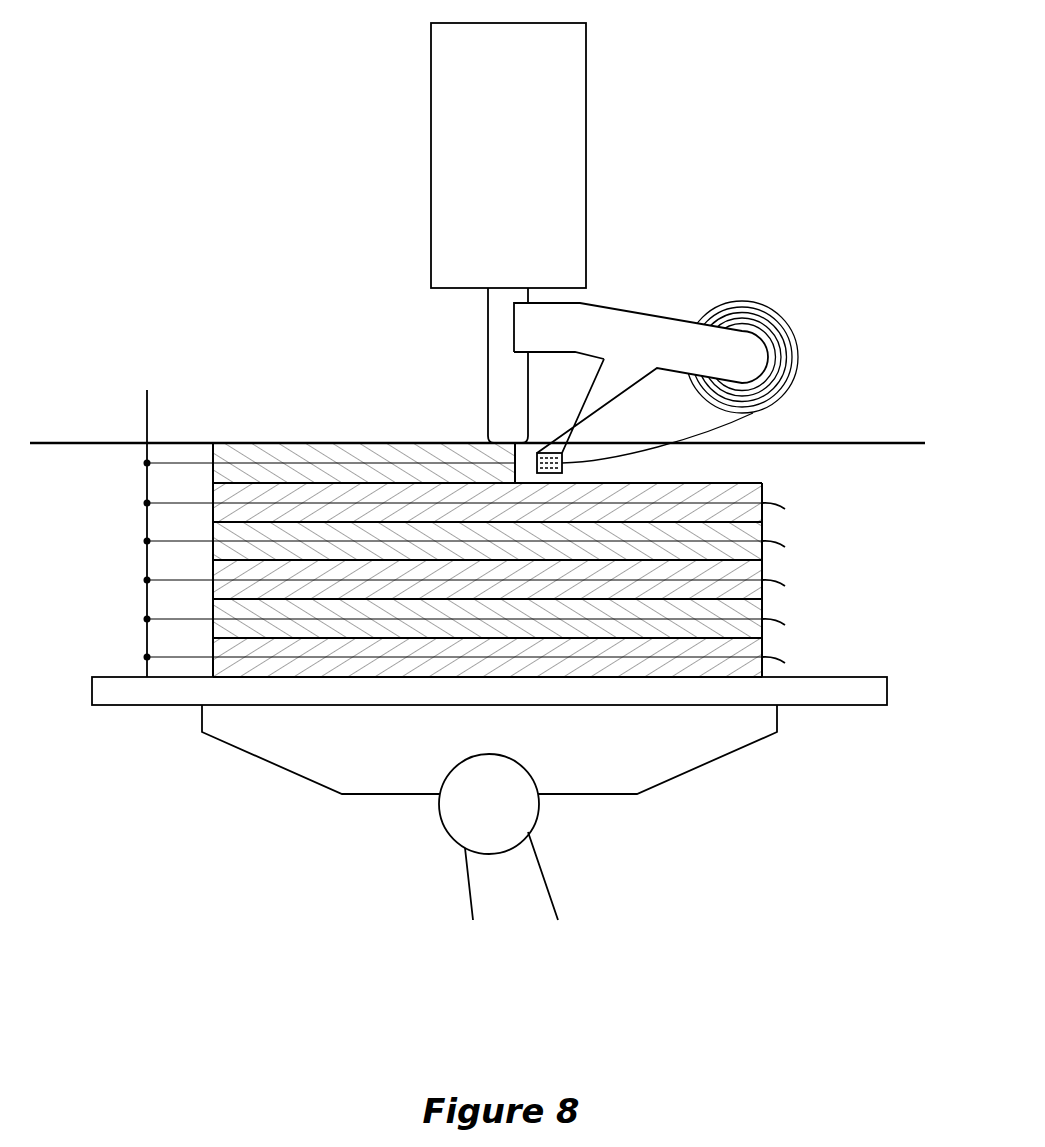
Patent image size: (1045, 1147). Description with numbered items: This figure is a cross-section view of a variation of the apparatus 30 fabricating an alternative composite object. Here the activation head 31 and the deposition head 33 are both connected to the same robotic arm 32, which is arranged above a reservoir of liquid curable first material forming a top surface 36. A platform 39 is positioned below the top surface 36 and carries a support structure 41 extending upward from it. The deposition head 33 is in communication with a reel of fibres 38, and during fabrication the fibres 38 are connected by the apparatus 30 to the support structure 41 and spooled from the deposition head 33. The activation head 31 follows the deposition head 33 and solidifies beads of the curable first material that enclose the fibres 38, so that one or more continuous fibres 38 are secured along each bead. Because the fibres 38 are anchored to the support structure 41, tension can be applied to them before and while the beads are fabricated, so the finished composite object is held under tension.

The apparatus 30 is at (491, 471).
The activation head 31 is at (505, 365).
The robotic arm 32 is at (452, 222).
The deposition head 33 is at (605, 390).
The top surface 36 is at (100, 443).
The fibres 38 is at (790, 358).
The platform 39 is at (873, 690).
The support structure 41 is at (147, 598).